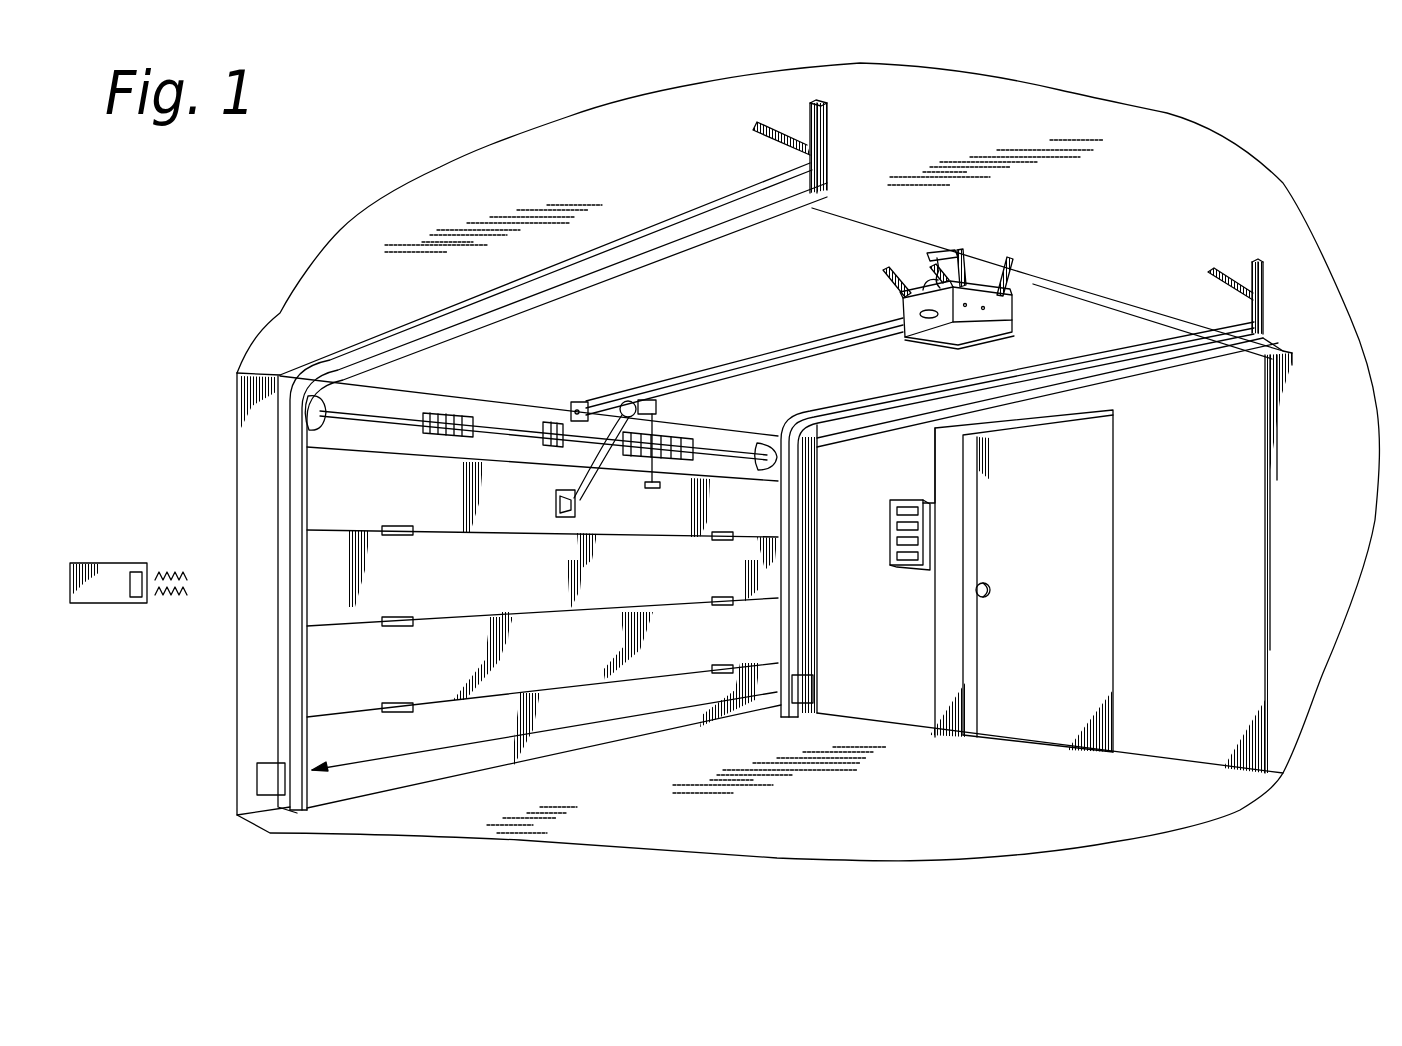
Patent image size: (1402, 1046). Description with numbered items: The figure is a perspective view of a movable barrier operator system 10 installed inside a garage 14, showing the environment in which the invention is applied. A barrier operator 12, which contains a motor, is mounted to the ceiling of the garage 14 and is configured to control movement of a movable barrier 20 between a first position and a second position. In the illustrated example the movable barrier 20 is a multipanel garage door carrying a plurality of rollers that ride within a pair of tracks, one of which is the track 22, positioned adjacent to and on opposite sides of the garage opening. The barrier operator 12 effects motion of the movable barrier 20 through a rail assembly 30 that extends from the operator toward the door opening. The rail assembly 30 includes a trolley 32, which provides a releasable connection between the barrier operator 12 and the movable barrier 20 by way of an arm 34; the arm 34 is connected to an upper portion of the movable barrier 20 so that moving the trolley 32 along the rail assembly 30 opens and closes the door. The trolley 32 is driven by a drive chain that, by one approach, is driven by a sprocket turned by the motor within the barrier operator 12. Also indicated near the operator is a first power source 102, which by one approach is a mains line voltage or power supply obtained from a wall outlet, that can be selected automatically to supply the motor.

The movable barrier operator system 10 is at (1092, 221).
The first power source 102 is at (937, 255).
The barrier operator 12 is at (1005, 309).
The rail assembly 30 is at (741, 349).
The trolley 32 is at (655, 407).
The arm 34 is at (590, 502).
The garage 14 is at (257, 468).
The movable barrier 20 is at (630, 732).
The track 22 is at (290, 723).